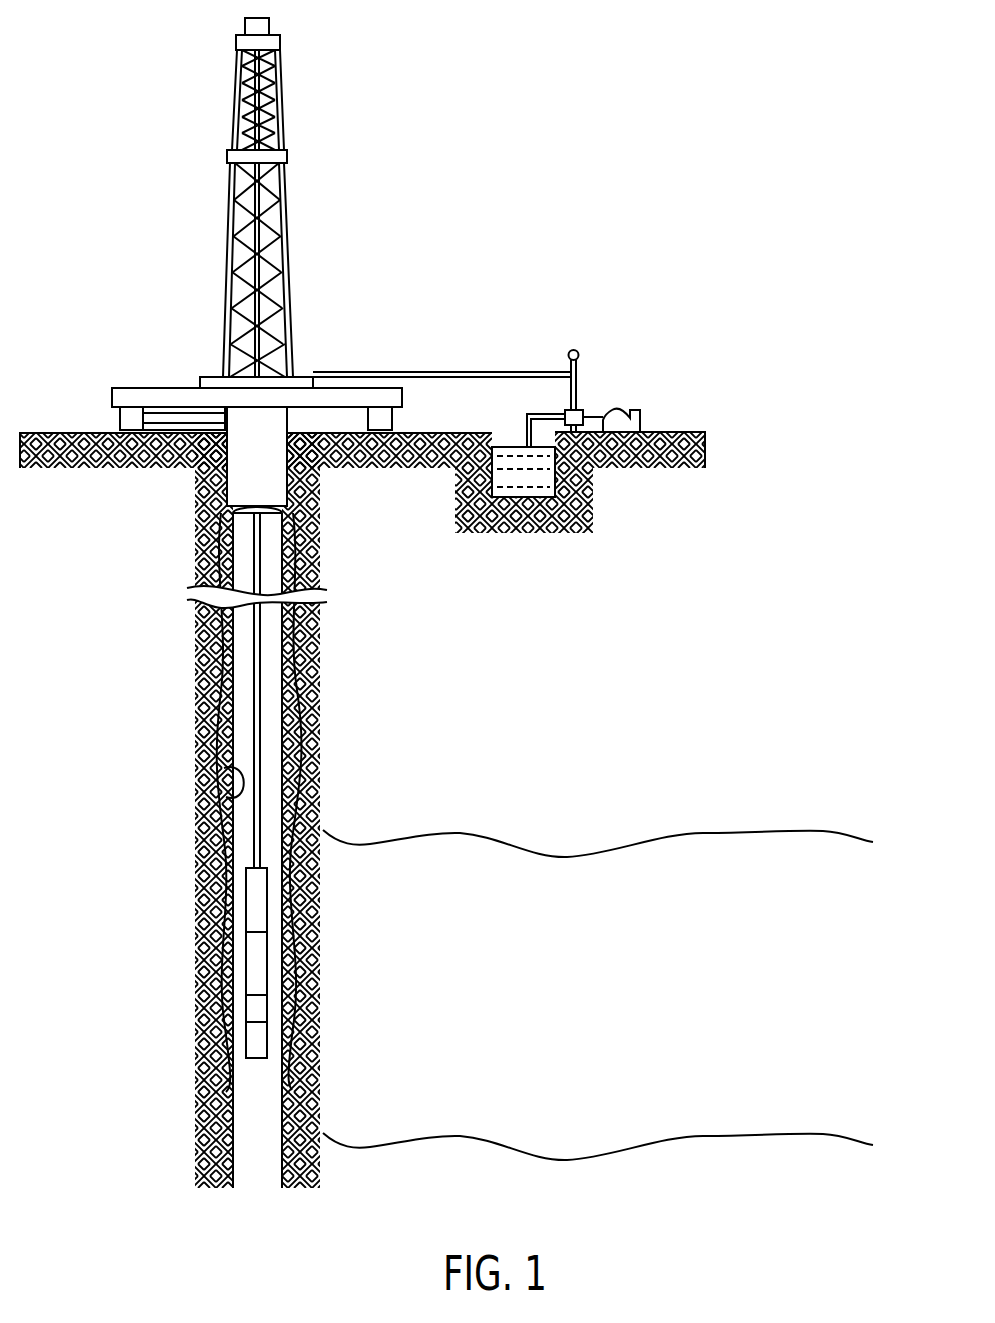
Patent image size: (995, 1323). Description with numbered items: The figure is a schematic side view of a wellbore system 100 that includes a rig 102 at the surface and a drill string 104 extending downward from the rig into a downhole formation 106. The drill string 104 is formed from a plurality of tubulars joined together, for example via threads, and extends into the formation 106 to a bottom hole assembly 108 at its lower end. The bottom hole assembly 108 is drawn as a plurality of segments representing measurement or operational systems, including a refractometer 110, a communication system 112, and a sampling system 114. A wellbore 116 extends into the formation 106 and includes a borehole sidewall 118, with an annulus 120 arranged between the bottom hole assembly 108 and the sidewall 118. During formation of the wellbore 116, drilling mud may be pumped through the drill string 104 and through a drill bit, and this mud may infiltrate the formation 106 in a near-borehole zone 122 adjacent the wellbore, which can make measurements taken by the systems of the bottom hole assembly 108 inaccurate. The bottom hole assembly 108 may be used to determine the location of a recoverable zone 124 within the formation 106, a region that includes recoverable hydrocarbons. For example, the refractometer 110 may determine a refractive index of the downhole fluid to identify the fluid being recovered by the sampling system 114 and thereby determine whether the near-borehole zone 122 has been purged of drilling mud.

The wellbore system 100 is at (362, 275).
The rig 102 is at (287, 254).
The drill string 104 is at (262, 733).
The downhole formation 106 is at (620, 761).
The bottom hole assembly 108 is at (338, 1018).
The refractometer 110 is at (255, 902).
The communication system 112 is at (255, 963).
The sampling system 114 is at (255, 1008).
The wellbore 116 is at (264, 797).
The borehole sidewall 118 is at (222, 770).
The annulus 120 is at (270, 646).
The near-borehole zone 122 is at (300, 562).
The recoverable zone 124 is at (615, 997).